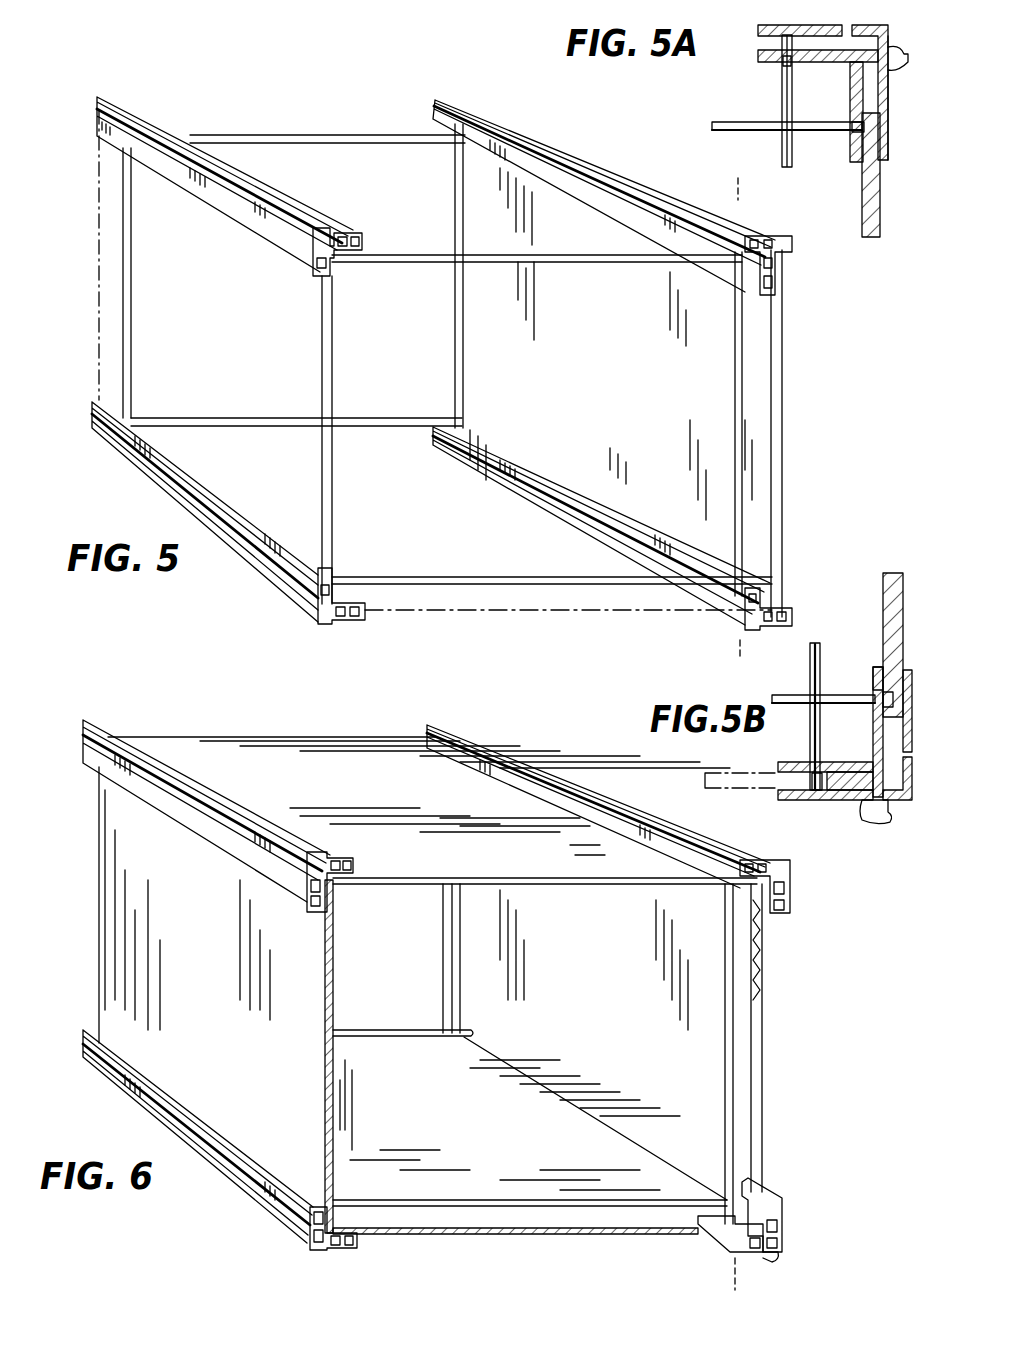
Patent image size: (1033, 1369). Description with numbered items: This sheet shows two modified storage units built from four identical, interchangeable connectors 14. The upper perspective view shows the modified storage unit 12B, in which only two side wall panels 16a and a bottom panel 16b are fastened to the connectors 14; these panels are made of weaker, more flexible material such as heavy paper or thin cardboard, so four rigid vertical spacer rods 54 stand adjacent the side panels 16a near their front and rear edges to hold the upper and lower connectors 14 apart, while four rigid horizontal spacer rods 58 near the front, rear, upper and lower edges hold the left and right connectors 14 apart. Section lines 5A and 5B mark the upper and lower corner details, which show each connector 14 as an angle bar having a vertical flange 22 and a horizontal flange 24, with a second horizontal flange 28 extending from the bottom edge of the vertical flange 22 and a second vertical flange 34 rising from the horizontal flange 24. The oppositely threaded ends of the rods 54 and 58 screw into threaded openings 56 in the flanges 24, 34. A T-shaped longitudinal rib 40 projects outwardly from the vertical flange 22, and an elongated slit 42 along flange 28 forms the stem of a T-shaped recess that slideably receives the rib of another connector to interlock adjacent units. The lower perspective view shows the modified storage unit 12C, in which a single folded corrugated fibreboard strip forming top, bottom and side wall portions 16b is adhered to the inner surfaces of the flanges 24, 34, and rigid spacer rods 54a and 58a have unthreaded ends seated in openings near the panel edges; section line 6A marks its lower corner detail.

In FIG. 5, the modified storage unit 12B is at (426, 108).
In FIG. 6, the modified storage unit 12C is at (376, 740).
In FIG. 5, the connector 14 is at (356, 224).
In FIG. 5A, the connector 14 is at (896, 138).
In FIG. 5B, the connector 14 is at (912, 824).
In FIG. 6, the connector 14 is at (240, 1192).
In FIG. 5, the side wall panel 16a is at (96, 275).
In FIG. 5A, the side wall panel 16a is at (871, 175).
In FIG. 5B, the side wall panel 16a is at (893, 574).
In FIG. 5, the bottom panel 16b is at (558, 610).
In FIG. 5B, the bottom panel 16b is at (732, 796).
In FIG. 6, the bottom panel 16b is at (786, 994).
In FIG. 5A, the vertical flange 22 is at (890, 100).
In FIG. 5B, the vertical flange 22 is at (832, 800).
In FIG. 5A, the horizontal flange 24 is at (760, 56).
In FIG. 5B, the horizontal flange 24 is at (873, 668).
In FIG. 6, the horizontal flange 24 is at (762, 1210).
In FIG. 5A, the second horizontal flange 28 is at (768, 25).
In FIG. 5B, the second horizontal flange 28 is at (910, 670).
In FIG. 5A, the second vertical flange 34 is at (850, 104).
In FIG. 5B, the second vertical flange 34 is at (790, 762).
In FIG. 6, the second vertical flange 34 is at (748, 1250).
In FIG. 5A, the longitudinal rib 40 is at (908, 48).
In FIG. 5B, the longitudinal rib 40 is at (872, 822).
In FIG. 6, the longitudinal rib 40 is at (772, 1264).
In FIG. 5B, the elongated slit 42 is at (906, 770).
In FIG. 5, the vertical spacer rod 54 is at (131, 323).
In FIG. 5A, the vertical spacer rod 54 is at (792, 165).
In FIG. 5B, the vertical spacer rod 54 is at (810, 666).
In FIG. 6, the vertical spacer rod 54a is at (462, 924).
In FIG. 5A, the threaded opening 56 is at (782, 62).
In FIG. 5B, the threaded opening 56 is at (883, 696).
In FIG. 5, the horizontal spacer rod 58 is at (318, 133).
In FIG. 5A, the horizontal spacer rod 58 is at (712, 122).
In FIG. 5B, the horizontal spacer rod 58 is at (776, 696).
In FIG. 6, the horizontal spacer rod 58a is at (416, 1040).
In FIG. 5, the section line 5A— 5A is at (738, 190).
In FIG. 5, the section line 5B— 5B is at (742, 484).
In FIG. 6, the section line 6A— 6A is at (730, 1122).